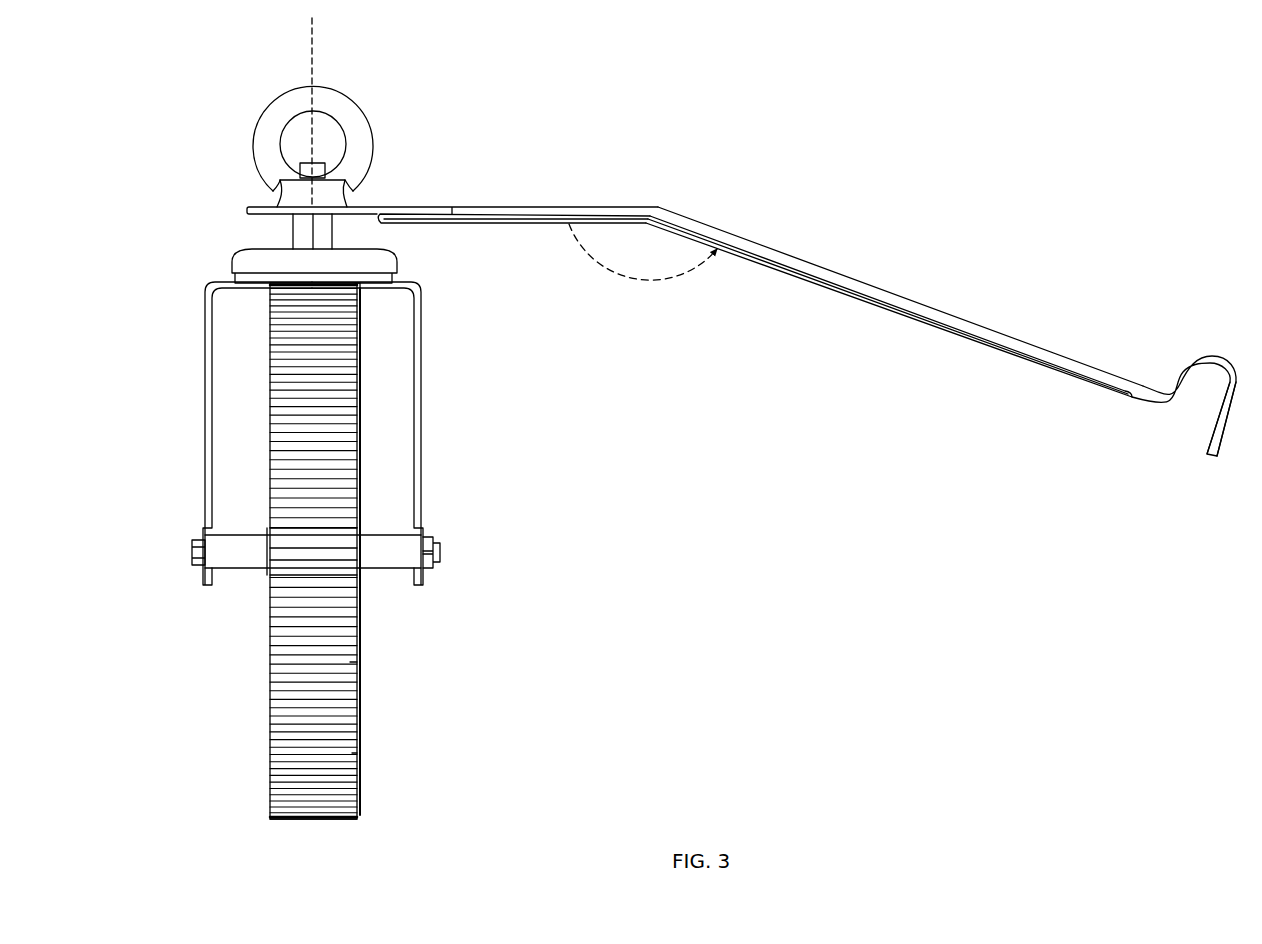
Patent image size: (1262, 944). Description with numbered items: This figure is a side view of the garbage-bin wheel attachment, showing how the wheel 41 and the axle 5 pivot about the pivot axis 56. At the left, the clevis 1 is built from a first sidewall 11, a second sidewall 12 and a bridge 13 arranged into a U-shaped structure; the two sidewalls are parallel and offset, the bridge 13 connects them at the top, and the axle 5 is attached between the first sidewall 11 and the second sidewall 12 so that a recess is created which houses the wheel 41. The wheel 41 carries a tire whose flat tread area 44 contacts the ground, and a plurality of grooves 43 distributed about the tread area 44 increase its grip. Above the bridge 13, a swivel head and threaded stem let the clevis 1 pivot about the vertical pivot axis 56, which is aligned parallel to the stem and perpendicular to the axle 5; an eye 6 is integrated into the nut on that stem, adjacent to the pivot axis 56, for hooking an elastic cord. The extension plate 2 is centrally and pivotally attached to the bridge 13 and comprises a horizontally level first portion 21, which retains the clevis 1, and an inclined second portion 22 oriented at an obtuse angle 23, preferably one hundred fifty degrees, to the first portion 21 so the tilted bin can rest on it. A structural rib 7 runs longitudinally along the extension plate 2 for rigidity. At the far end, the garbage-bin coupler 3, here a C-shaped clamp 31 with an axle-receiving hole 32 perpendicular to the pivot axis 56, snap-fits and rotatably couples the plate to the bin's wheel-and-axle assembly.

The clevis 1 is at (220, 276).
The extension plate 2 is at (667, 178).
The garbage-bin coupler 3 is at (1190, 377).
The axle 5 is at (383, 576).
The eye 6 is at (256, 124).
The structural rib 7 is at (478, 223).
The first sidewall 11 is at (205, 365).
The second sidewall 12 is at (421, 367).
The bridge 13 is at (368, 288).
The first portion 21 is at (515, 207).
The second portion 22 is at (904, 297).
The obtuse angle 23 is at (637, 297).
The C-shaped clamp 31 is at (1214, 356).
The axle-receiving hole 32 is at (1203, 406).
The wheel 41 is at (270, 697).
The plurality of grooves 43 is at (350, 662).
The tread area 44 is at (313, 820).
The pivot axis 56 is at (312, 40).